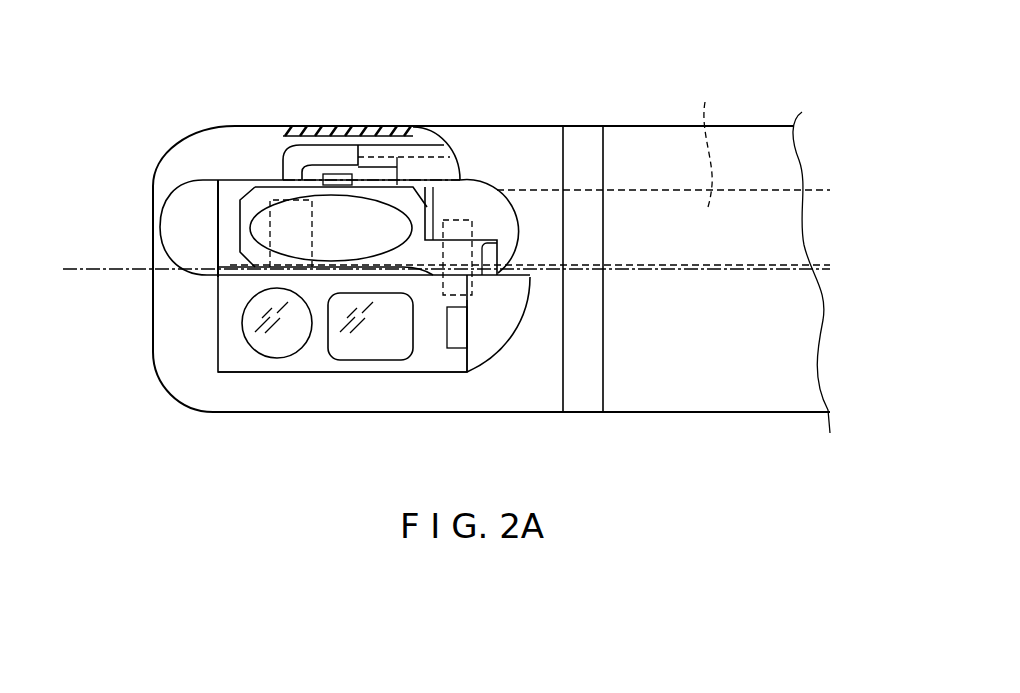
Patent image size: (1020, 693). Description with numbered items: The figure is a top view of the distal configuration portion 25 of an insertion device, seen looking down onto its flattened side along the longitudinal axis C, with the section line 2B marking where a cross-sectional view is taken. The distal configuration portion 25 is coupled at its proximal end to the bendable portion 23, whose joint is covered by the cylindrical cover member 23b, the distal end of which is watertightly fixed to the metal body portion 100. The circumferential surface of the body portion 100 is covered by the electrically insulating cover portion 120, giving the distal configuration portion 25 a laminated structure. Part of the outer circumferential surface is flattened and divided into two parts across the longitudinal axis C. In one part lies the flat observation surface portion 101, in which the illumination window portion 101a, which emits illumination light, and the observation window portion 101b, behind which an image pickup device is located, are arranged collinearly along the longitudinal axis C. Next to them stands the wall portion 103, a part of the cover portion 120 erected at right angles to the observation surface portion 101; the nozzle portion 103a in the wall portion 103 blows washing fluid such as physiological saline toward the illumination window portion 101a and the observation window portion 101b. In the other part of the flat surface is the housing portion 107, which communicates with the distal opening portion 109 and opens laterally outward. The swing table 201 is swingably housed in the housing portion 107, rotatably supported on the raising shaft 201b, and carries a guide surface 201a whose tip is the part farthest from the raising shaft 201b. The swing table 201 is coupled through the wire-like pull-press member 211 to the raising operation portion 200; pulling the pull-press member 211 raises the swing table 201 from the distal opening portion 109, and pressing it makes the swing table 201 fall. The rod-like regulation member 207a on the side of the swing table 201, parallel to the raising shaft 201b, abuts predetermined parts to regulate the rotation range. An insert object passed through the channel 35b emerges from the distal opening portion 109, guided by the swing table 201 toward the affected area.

The bendable portion 23 is at (696, 311).
The cover member 23b is at (735, 424).
The distal configuration portion 25 is at (322, 292).
The channel 35b is at (705, 142).
The body portion 100 is at (309, 378).
The observation surface portion 101 is at (374, 379).
The illumination window portion 101a is at (273, 350).
The observation window portion 101b is at (375, 350).
The wall portion 103 is at (468, 379).
The nozzle portion 103a is at (452, 337).
The housing portion 107 is at (238, 190).
The distal opening portion 109 is at (226, 190).
The cover portion 120 is at (173, 356).
The raising operation portion 200 is at (257, 178).
The swing table 201 is at (253, 236).
The guide surface 201a is at (427, 207).
The raising shaft 201b is at (460, 222).
The regulation member 207a is at (336, 186).
The pull-press member 211 is at (410, 152).
The longitudinal axis C is at (86, 275).
The section line 2B is at (98, 225).